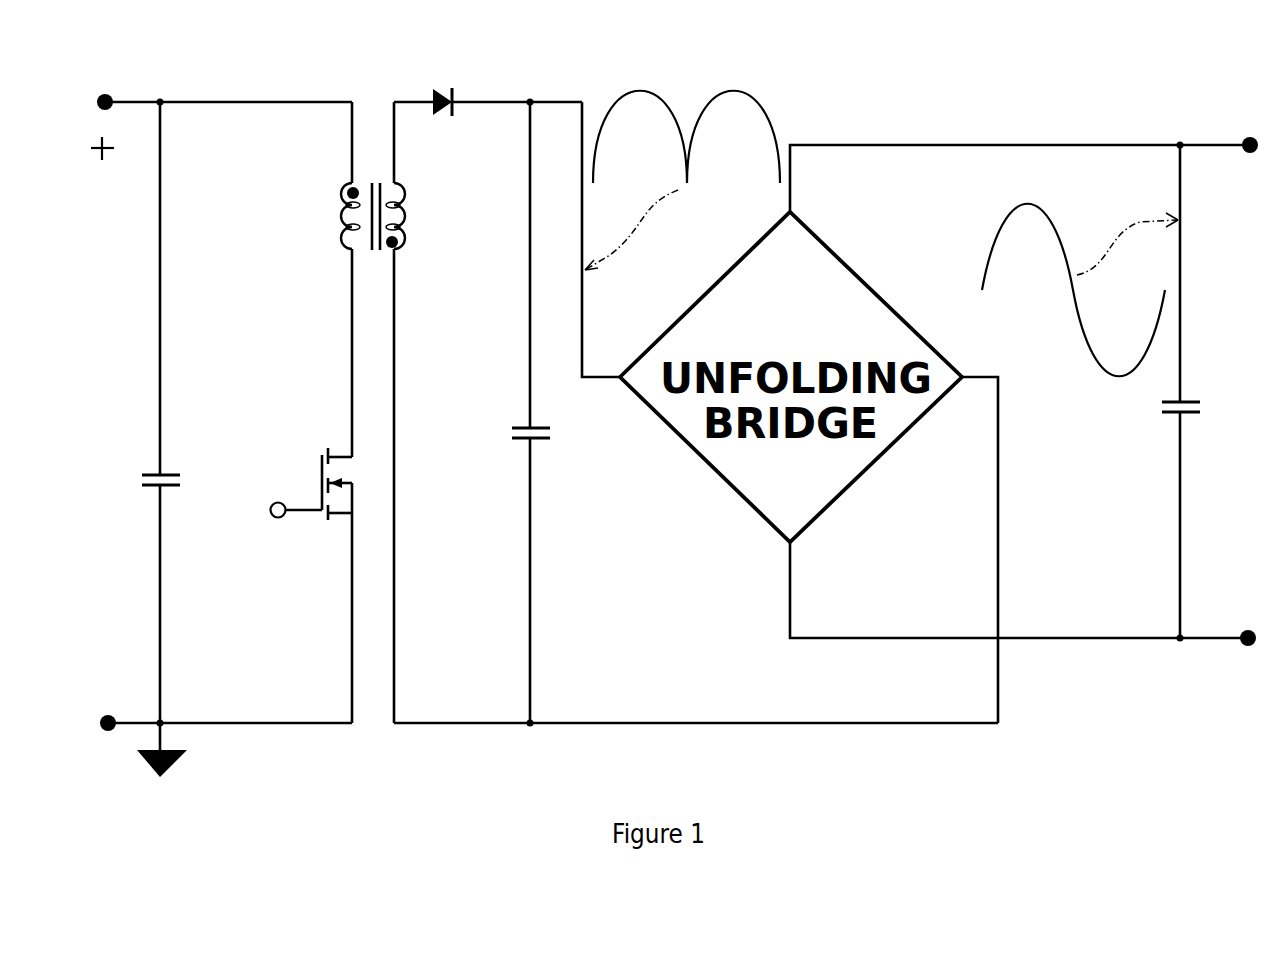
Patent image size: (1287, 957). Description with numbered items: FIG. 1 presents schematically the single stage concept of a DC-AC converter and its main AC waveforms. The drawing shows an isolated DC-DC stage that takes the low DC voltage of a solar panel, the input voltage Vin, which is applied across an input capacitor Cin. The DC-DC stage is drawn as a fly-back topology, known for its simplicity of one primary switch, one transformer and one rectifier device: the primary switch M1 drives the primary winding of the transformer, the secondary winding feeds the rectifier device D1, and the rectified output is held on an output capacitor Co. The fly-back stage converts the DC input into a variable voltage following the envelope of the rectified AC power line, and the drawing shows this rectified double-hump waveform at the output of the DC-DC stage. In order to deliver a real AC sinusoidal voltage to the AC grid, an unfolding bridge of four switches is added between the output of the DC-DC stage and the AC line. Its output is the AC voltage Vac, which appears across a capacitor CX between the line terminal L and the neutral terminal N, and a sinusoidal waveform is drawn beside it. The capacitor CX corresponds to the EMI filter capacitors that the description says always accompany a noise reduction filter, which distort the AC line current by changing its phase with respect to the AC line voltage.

The DC input voltage Vin is at (111, 412).
The input capacitor Cin is at (132, 505).
The switching transistor (MOSFET) M1 is at (312, 507).
The output rectifier diode D1 is at (451, 128).
The output capacitor Co is at (506, 454).
The AC output filter capacitor CX is at (1147, 433).
The AC output voltage Vac is at (1125, 290).
The line output terminal L is at (1235, 169).
The neutral output terminal N is at (1234, 611).